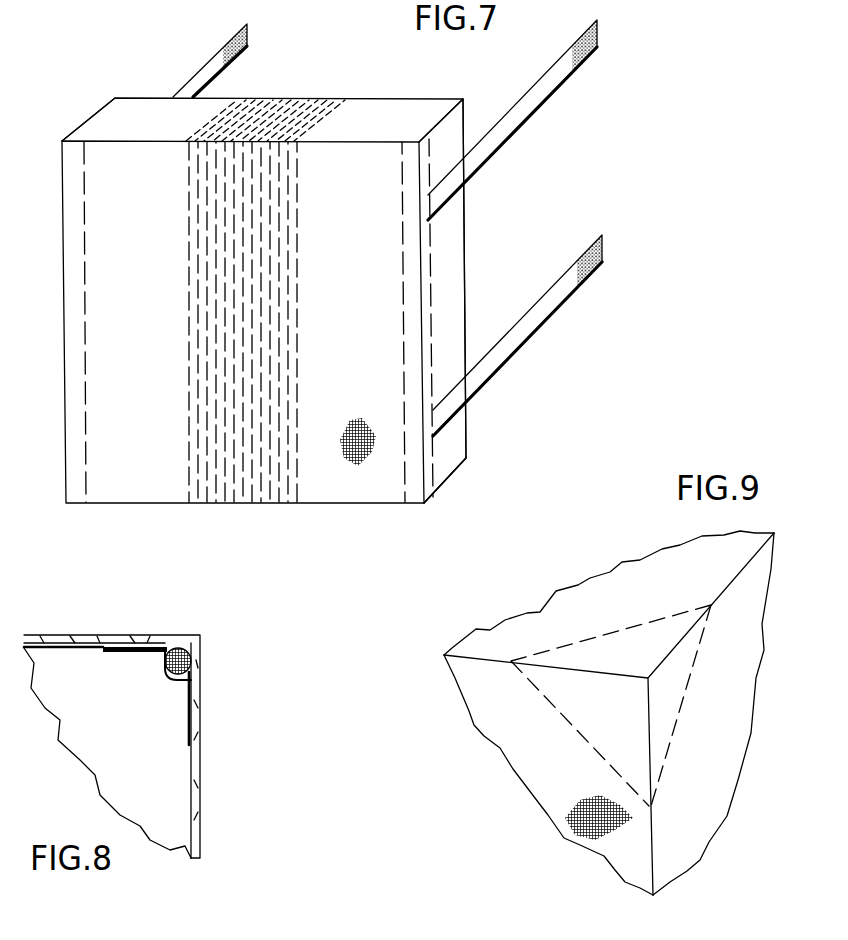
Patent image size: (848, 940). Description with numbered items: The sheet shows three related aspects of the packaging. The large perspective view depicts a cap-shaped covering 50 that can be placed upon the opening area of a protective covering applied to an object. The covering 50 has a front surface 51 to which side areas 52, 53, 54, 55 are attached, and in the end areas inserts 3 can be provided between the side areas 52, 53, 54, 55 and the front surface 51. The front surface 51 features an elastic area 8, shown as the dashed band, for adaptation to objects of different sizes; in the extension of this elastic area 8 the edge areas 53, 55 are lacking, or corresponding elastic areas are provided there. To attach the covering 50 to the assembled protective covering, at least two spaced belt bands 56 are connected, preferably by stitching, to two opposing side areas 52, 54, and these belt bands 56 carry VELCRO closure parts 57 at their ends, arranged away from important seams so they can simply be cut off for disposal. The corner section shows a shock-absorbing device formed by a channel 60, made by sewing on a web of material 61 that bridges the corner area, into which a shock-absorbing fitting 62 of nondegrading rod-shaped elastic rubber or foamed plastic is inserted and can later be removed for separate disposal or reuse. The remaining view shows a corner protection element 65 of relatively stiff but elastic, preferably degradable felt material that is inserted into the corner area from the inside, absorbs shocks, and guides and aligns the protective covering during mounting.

In FIG. 7, the insert 3 is at (75, 292).
In FIG. 7, the elastic area 8 is at (188, 457).
In FIG. 7, the covering 50 is at (277, 312).
In FIG. 7, the front surface 51 is at (378, 478).
In FIG. 7, the side area 52 is at (453, 254).
In FIG. 7, the side area 53 is at (436, 492).
In FIG. 7, the side area 54 is at (88, 120).
In FIG. 7, the side area 55 is at (312, 102).
In FIG. 7, the belt band 56 is at (390, 228).
In FIG. 7, the VELCRO closure part 57 is at (243, 50).
In FIG. 8, the channel 60 is at (197, 663).
In FIG. 8, the web of material 61 is at (172, 678).
In FIG. 8, the shock-absorbing fitting 62 is at (178, 648).
In FIG. 9, the corner protection element 65 is at (667, 733).